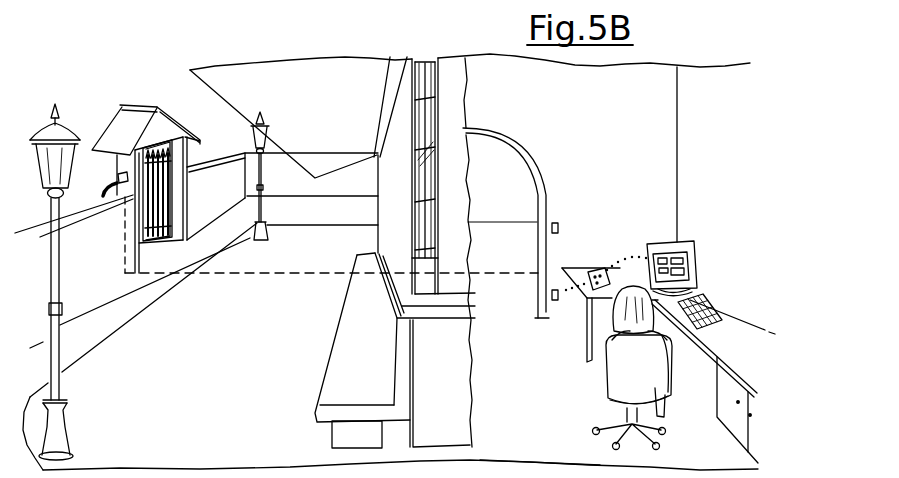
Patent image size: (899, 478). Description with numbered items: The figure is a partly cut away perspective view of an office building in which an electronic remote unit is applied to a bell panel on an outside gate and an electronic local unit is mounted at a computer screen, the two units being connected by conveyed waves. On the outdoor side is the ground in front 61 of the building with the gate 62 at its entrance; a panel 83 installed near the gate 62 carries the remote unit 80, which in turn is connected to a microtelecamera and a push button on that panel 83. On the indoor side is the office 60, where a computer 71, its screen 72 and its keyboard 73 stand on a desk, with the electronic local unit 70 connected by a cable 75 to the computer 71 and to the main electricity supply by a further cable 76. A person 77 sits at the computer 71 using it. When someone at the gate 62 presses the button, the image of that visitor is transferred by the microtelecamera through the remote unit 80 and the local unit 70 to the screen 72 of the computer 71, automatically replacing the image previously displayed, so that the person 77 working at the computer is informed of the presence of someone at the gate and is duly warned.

The office 60 is at (540, 444).
The ground in front 61 is at (265, 444).
The gate 62 is at (157, 163).
The electronic local unit 70 is at (590, 258).
The computer 71 is at (700, 244).
The screen 72 is at (662, 262).
The keyboard 73 is at (722, 318).
The cable 75 is at (618, 260).
The cable 76 is at (580, 303).
The person using the computer 77 is at (646, 345).
The remote unit 80 is at (102, 132).
The panel 83 is at (100, 197).